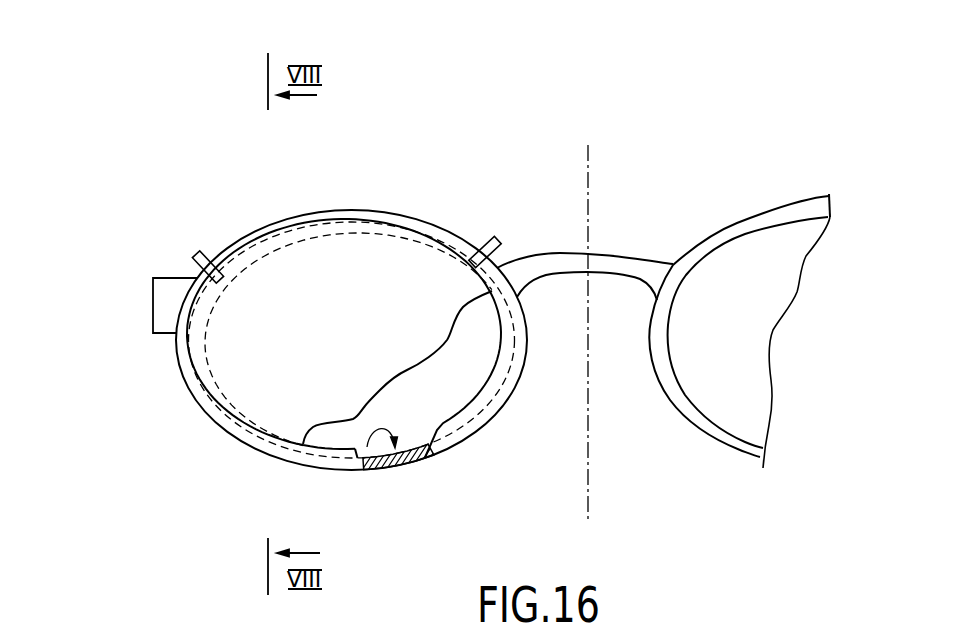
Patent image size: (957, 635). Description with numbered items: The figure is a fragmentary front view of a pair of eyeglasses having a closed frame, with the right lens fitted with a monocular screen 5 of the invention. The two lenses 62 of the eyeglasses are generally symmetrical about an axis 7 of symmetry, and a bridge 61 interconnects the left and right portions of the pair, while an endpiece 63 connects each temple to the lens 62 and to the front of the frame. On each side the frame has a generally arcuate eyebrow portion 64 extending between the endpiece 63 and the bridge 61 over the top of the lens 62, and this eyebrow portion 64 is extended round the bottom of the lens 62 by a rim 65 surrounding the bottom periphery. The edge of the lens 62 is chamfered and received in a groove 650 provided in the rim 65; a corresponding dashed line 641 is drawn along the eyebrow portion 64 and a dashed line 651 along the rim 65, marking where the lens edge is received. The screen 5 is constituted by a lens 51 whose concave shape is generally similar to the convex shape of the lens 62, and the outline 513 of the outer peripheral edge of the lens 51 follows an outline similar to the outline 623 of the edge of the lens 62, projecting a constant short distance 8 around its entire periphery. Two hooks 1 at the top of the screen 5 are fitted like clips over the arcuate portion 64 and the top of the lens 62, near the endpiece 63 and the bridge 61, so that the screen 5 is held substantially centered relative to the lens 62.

The hook 1 is at (202, 242).
The monocular screen 5 is at (213, 344).
The axis of symmetry 7 is at (595, 172).
The constant short distance 8 is at (215, 361).
The lens of the screen 51 is at (389, 250).
The bridge 61 is at (580, 262).
The lens of the eyeglasses 62 is at (715, 385).
The endpiece 63 is at (163, 290).
The eyebrow portion 64 is at (314, 211).
The rim 65 is at (331, 470).
The outline of the screen lens 513 is at (197, 388).
The outline of the eyeglass lens 623 is at (420, 457).
The lens groove 641 is at (415, 243).
The groove 650 is at (357, 458).
The lens edge 651 is at (271, 432).